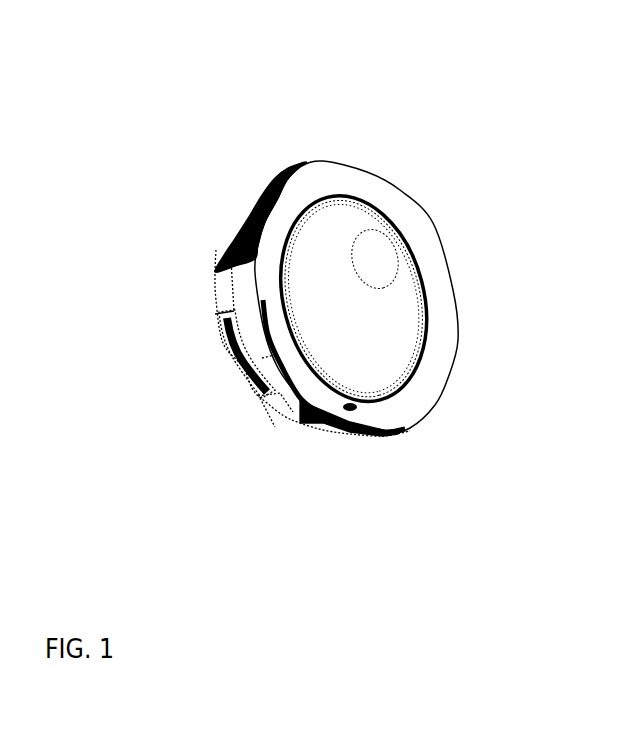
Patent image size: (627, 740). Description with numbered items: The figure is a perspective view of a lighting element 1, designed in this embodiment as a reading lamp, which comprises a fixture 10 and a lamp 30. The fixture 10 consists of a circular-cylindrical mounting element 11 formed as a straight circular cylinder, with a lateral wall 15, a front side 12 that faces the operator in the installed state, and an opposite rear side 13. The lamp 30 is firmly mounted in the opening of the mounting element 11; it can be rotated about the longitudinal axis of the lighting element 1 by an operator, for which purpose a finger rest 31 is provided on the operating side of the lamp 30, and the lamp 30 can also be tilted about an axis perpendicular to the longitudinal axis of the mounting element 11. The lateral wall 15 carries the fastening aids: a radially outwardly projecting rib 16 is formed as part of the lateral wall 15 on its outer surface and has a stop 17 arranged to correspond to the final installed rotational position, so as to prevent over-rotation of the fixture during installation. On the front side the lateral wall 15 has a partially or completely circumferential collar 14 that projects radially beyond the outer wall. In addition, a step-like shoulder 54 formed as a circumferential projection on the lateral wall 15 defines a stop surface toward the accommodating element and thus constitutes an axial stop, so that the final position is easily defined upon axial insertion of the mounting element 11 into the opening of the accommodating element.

The lighting element 1 is at (341, 297).
The fixture 10 is at (341, 297).
The mounting element 11 is at (247, 290).
The front side 12 is at (400, 435).
The rear side 13 is at (227, 233).
The collar 14 is at (413, 405).
The lateral wall 15 is at (300, 402).
The rib 16 is at (233, 358).
The stop 17 is at (253, 386).
The lamp 30 is at (405, 335).
The finger rest 31 is at (380, 258).
The step-like shoulder 54 is at (247, 309).